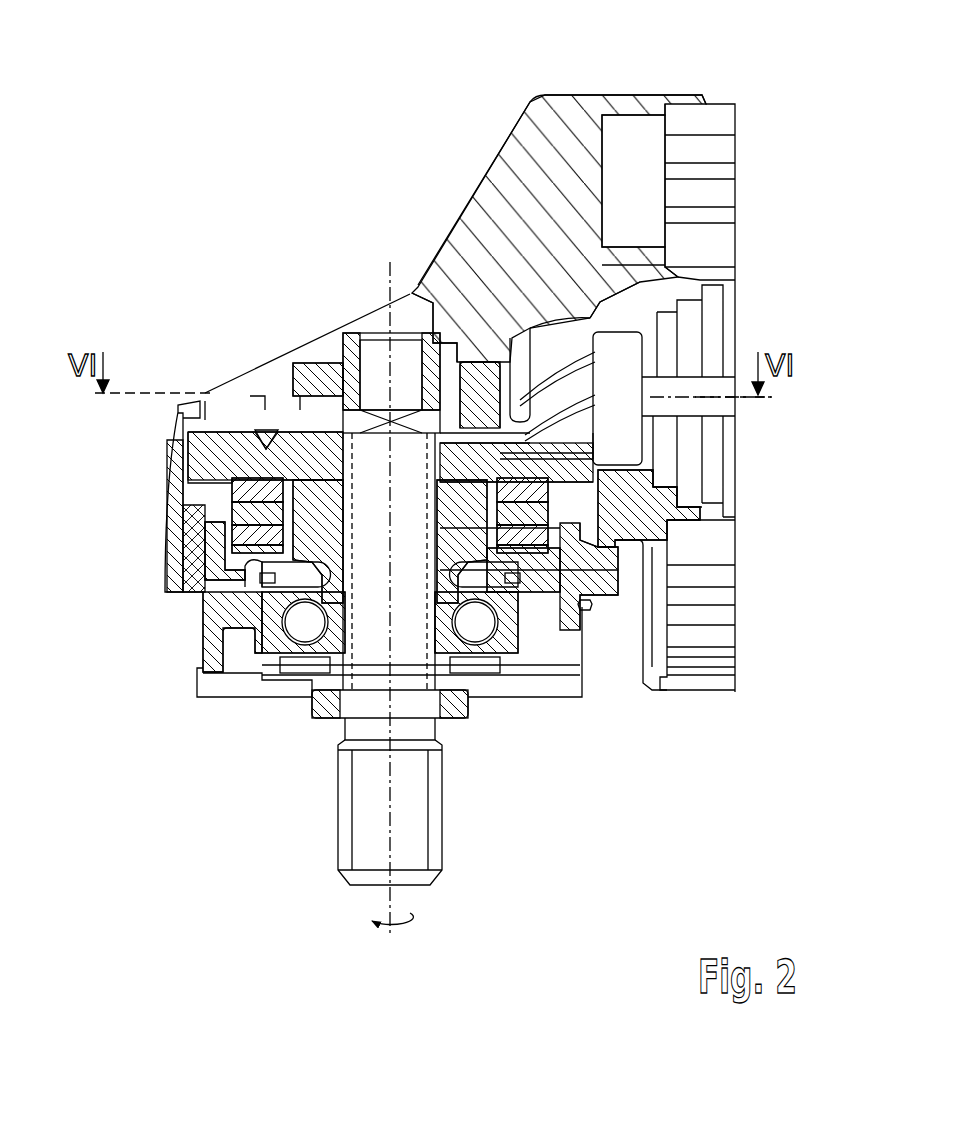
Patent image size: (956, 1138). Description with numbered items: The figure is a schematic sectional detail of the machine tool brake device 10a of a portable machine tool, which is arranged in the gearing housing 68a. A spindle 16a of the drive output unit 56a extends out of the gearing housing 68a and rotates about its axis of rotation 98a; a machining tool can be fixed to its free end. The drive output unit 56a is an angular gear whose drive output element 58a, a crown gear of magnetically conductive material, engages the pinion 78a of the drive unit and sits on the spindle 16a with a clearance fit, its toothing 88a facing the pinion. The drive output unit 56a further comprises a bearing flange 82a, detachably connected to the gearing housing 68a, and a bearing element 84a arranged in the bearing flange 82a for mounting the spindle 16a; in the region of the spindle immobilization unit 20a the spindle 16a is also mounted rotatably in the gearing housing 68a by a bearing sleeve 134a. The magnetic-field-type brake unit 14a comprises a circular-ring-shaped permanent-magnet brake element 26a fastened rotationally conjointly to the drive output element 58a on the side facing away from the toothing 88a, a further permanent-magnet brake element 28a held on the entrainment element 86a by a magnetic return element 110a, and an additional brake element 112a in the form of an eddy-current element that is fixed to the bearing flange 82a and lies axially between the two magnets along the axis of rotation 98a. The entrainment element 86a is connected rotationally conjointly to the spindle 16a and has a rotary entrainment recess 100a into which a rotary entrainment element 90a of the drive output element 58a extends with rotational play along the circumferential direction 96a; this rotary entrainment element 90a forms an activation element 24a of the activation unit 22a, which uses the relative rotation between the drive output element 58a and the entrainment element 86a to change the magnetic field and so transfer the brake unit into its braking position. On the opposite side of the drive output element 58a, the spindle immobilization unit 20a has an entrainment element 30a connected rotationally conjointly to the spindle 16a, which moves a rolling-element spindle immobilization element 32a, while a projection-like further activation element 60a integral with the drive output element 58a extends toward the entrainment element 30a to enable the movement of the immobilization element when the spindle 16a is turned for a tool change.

The machine tool brake device 10a is at (215, 168).
The magnetic-field-type brake unit 14a is at (150, 540).
The spindle 16a is at (420, 808).
The spindle immobilization unit 20a is at (350, 298).
The activation unit 22a is at (150, 428).
The activation element 24a is at (520, 555).
The brake element 26a is at (242, 487).
The further brake element 28a is at (245, 537).
The entrainment element 30a is at (340, 395).
The spindle immobilization element 32a is at (262, 405).
The drive output unit 56a is at (283, 803).
The drive output element 58a is at (260, 445).
The further activation element 60a is at (264, 432).
The gearing housing 68a is at (560, 135).
The pinion 78a is at (620, 358).
The bearing flange 82a is at (215, 640).
The bearing element 84a is at (276, 640).
The entrainment element 86a is at (230, 610).
The toothing 88a is at (210, 395).
The rotary entrainment element 90a is at (520, 555).
The circumferential direction 96a is at (376, 915).
The axis of rotation 98a is at (392, 933).
The rotary entrainment recess 100a is at (462, 510).
The magnetic return element 110a is at (315, 525).
The additional brake element 112a is at (240, 510).
The bearing sleeve 134a is at (335, 375).